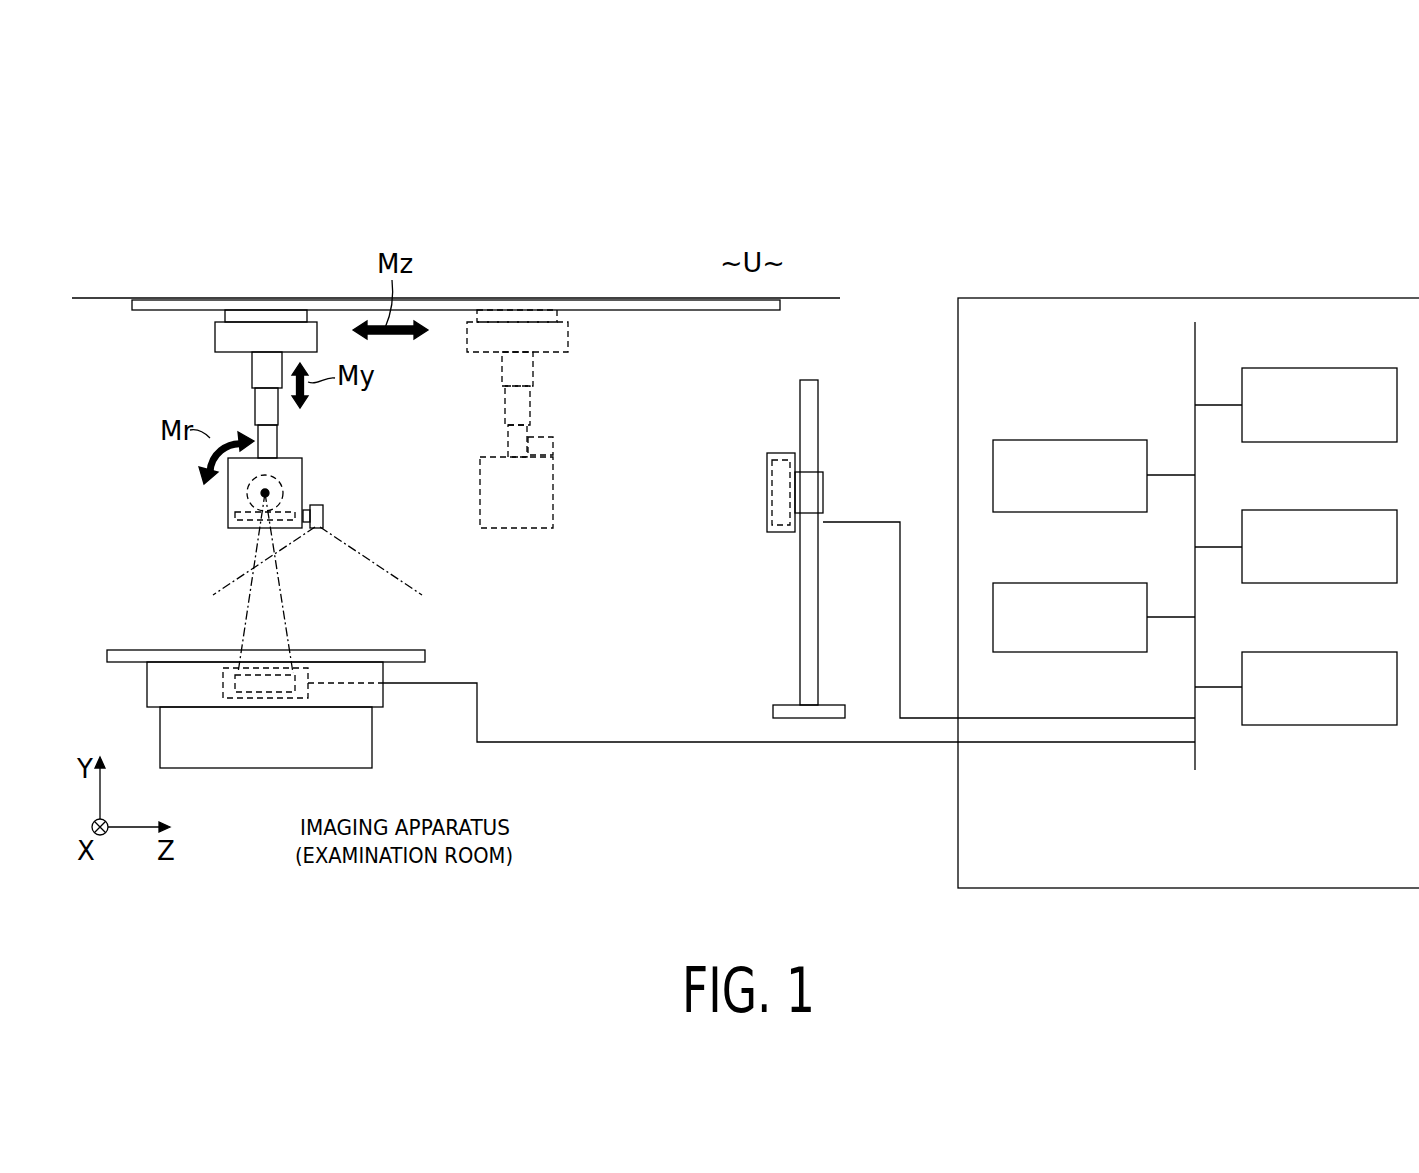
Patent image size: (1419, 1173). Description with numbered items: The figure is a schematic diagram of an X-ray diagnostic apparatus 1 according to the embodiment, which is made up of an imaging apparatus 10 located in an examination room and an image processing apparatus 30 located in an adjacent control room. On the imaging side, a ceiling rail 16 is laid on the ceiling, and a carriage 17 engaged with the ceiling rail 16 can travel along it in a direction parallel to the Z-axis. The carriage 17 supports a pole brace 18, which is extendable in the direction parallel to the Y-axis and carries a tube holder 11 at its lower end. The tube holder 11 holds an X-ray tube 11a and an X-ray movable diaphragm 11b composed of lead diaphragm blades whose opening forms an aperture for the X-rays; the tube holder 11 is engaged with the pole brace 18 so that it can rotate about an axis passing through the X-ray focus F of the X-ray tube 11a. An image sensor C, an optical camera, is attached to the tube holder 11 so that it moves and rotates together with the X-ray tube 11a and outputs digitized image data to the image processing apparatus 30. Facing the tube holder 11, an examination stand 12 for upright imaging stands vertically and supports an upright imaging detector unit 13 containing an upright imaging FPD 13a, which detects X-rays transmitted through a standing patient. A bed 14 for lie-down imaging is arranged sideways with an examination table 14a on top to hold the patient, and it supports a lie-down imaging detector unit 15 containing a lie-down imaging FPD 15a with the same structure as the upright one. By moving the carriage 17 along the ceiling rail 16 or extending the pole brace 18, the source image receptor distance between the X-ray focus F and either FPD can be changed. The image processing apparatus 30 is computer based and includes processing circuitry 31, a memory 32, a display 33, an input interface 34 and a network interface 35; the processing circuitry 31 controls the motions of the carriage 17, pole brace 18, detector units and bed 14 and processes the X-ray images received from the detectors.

The X-ray diagnostic apparatus 1 is at (750, 190).
The imaging apparatus 10 is at (455, 247).
The tube holder 11 is at (302, 476).
The X-ray tube 11a is at (247, 491).
The X-ray movable diaphragm 11b is at (230, 517).
The examination stand 12 is at (806, 380).
The upright imaging detector unit 13 is at (780, 453).
The upright imaging FPD 13a is at (772, 503).
The bed 14 is at (372, 738).
The examination table 14a is at (378, 650).
The lie-down imaging detector unit 15 is at (262, 703).
The lie-down imaging FPD 15a is at (223, 677).
The ceiling rail 16 is at (663, 310).
The carriage 17 is at (215, 337).
The pole brace 18 is at (252, 366).
The image processing apparatus 30 is at (1015, 247).
The processing circuitry 31 is at (1088, 440).
The memory 32 is at (1088, 583).
The display 33 is at (1337, 368).
The input interface 34 is at (1337, 510).
The network interface 35 is at (1337, 652).
The X-ray focus F is at (267, 488).
The image sensor C is at (323, 510).